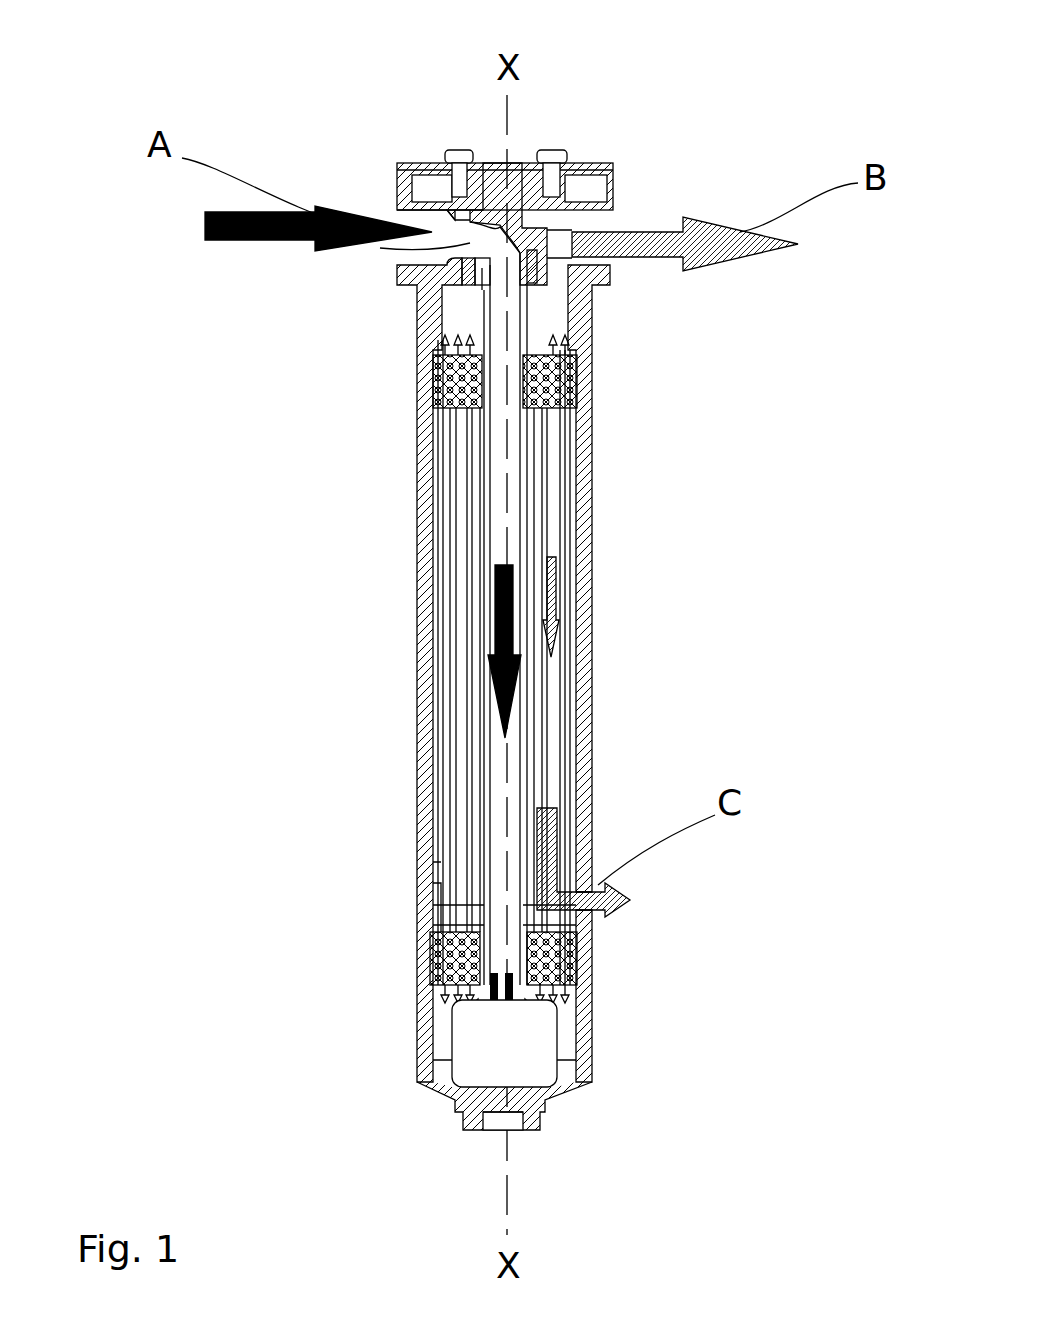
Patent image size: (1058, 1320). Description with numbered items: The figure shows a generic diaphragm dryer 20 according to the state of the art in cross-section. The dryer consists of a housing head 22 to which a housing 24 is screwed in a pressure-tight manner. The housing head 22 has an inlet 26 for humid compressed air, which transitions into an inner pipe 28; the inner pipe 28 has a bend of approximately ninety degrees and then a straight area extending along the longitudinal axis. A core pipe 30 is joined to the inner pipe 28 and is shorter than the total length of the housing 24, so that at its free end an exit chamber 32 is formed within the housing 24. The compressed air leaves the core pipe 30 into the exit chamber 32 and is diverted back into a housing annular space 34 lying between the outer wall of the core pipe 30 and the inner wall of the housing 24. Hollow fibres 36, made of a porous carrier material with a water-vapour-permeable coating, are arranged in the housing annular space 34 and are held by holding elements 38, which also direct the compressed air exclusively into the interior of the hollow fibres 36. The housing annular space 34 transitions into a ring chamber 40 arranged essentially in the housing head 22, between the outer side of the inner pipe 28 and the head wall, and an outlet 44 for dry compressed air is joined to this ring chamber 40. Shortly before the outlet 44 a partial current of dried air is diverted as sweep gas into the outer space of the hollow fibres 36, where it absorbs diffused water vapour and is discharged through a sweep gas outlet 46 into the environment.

The diaphragm dryer 20 is at (318, 458).
The housing head 22 is at (580, 160).
The housing 24 is at (583, 655).
The inlet 26 is at (400, 196).
The inner pipe 28 is at (468, 244).
The core pipe 30 is at (470, 742).
The exit chamber 32 is at (523, 1062).
The housing annular space 34 is at (445, 905).
The hollow fibres 36 is at (565, 538).
The holding elements 38 is at (576, 372).
The ring chamber 40 is at (548, 308).
The outlet 44 is at (588, 225).
The sweep gas outlet 46 is at (585, 924).